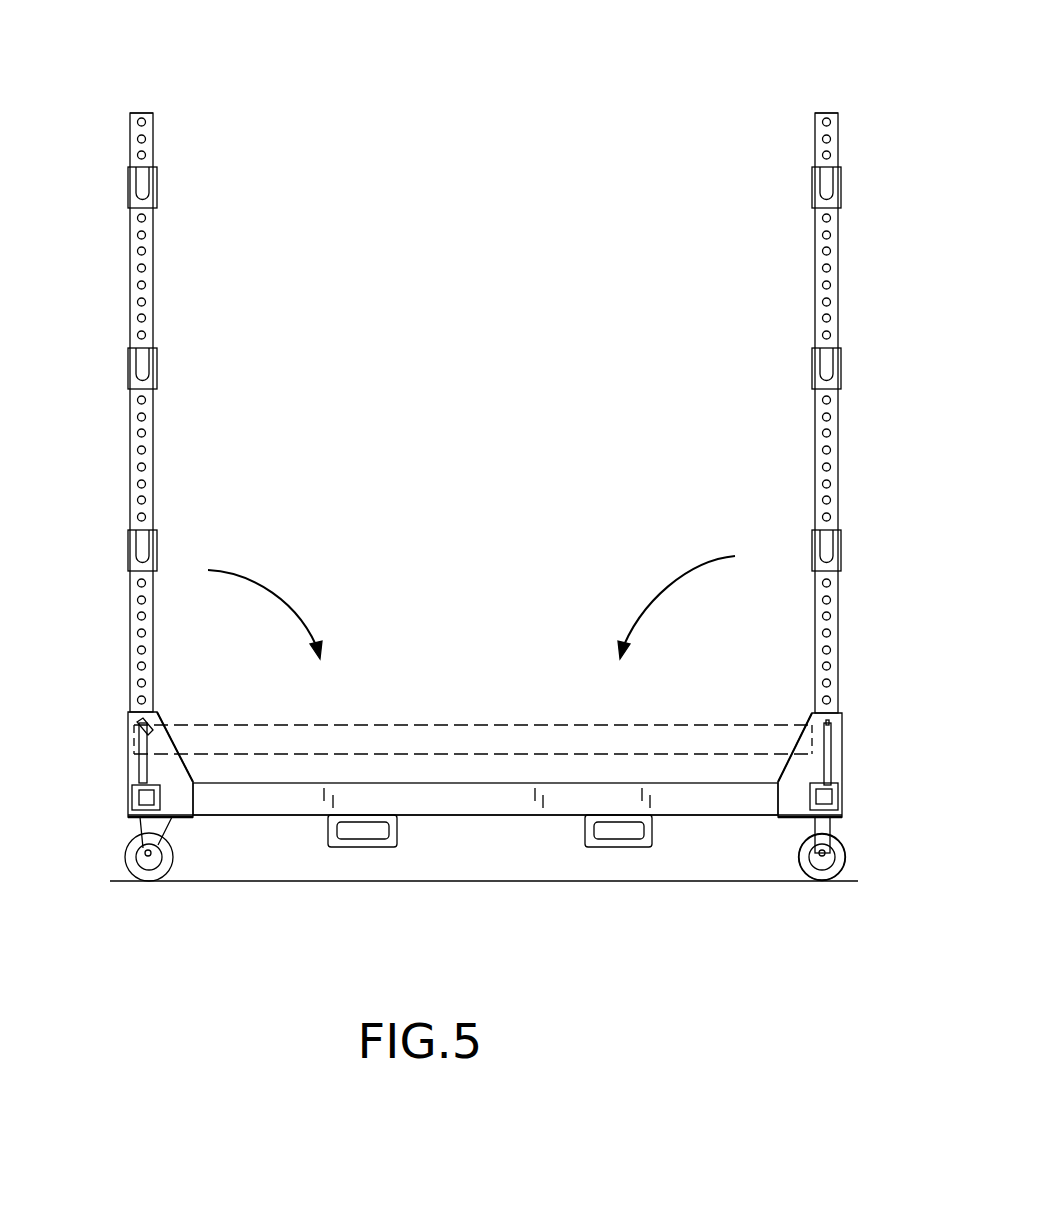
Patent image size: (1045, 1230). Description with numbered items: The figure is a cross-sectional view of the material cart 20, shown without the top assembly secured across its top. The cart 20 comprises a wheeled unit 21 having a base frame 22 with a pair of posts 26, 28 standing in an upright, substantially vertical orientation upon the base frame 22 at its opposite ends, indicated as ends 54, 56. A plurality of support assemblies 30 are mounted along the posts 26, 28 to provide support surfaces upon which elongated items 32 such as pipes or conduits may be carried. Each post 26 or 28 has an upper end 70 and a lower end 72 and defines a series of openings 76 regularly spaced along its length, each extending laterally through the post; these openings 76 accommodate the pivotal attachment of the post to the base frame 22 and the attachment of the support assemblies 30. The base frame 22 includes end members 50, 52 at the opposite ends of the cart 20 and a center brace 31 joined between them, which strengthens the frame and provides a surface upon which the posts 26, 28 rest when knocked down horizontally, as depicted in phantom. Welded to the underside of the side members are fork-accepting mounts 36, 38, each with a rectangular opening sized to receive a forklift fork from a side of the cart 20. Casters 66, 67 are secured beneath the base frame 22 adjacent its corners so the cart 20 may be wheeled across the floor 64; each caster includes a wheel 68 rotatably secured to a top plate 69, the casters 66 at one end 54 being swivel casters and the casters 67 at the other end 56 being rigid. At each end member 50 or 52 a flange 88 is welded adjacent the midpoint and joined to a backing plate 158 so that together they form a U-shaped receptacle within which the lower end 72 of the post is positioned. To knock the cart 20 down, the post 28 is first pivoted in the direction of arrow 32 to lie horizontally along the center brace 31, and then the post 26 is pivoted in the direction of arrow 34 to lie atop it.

The material cart 20 is at (880, 628).
The wheeled unit 21 is at (705, 815).
The base frame 22 is at (493, 815).
The post 26 is at (128, 320).
The post 28 is at (840, 330).
The support assembly 30 is at (127, 188).
The center brace 31 is at (447, 815).
The elongated items 32 is at (655, 598).
The arrow 34 is at (290, 595).
The fork-accepting mount 36 is at (368, 848).
The fork-accepting mount 38 is at (610, 848).
The end member 50 is at (148, 783).
The end member 52 is at (838, 785).
The end 54 is at (132, 800).
The end 56 is at (842, 797).
The floor 64 is at (852, 880).
The swivel caster 66 is at (170, 827).
The rigid caster 67 is at (832, 826).
The wheel 68 is at (168, 862).
The top plate 69 is at (141, 817).
The upper end 70 is at (155, 140).
The lower end 72 is at (131, 657).
The openings 76 is at (147, 450).
The flange 88 is at (160, 725).
The backing plate 158 is at (139, 724).